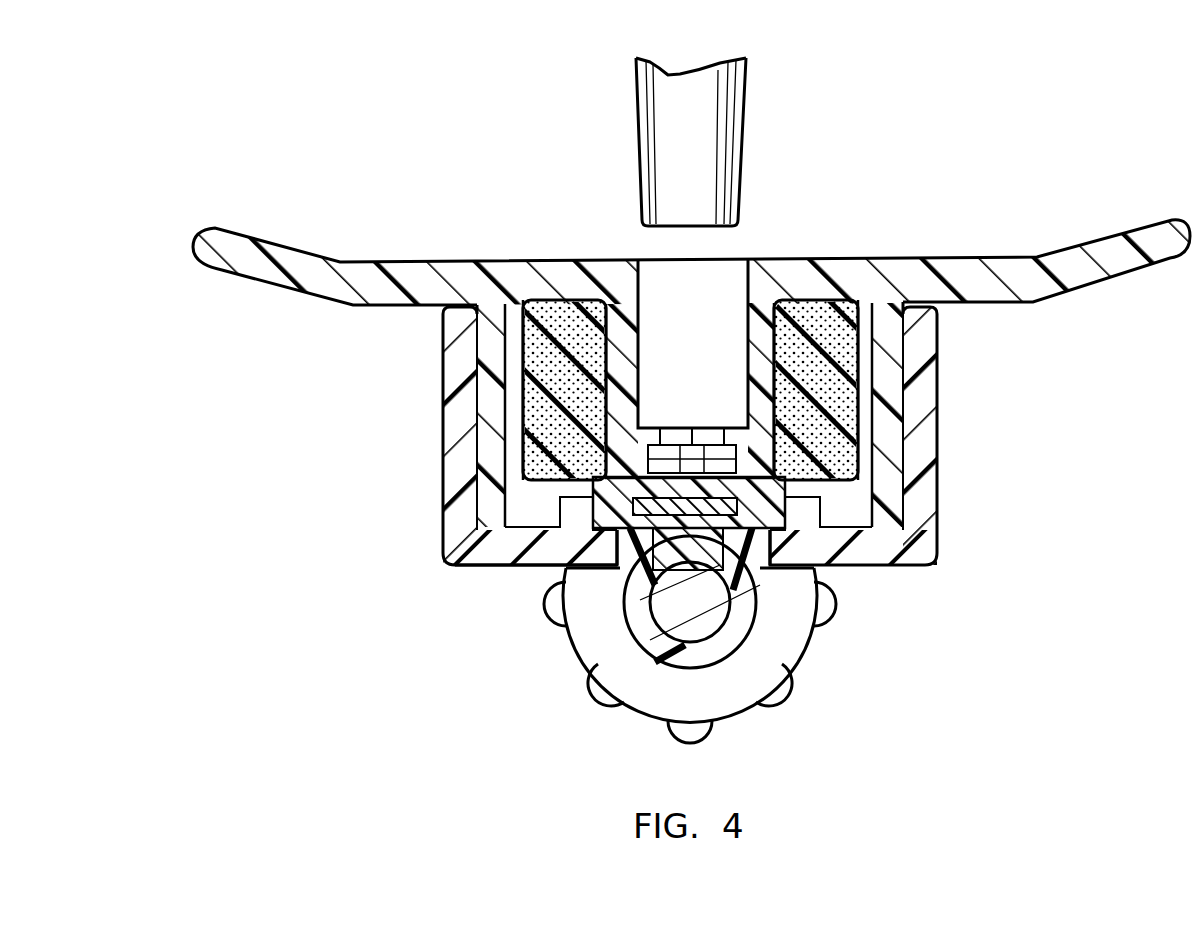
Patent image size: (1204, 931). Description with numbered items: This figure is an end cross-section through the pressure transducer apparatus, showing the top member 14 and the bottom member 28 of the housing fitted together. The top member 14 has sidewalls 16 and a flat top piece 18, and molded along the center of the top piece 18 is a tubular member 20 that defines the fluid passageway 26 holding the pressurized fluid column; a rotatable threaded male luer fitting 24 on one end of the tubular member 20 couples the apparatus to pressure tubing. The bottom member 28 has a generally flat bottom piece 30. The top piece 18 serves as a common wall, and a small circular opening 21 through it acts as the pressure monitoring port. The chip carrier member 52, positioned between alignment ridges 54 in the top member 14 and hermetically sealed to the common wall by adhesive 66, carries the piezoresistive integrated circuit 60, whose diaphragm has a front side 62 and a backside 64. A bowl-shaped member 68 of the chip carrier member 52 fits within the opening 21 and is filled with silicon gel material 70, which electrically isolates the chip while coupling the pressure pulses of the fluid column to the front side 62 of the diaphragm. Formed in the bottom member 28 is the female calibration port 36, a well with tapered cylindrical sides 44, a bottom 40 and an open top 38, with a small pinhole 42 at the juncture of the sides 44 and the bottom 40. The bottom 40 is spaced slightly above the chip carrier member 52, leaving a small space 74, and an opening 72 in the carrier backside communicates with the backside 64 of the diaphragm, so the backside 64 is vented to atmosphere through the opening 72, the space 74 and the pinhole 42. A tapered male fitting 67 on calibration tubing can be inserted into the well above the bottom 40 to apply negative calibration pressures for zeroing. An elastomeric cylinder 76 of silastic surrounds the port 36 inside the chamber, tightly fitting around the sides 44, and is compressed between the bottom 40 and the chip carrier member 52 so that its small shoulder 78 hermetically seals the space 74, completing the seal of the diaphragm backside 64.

The top member 14 is at (443, 565).
The sidewalls 16 is at (443, 410).
The top piece 18 is at (470, 568).
The tubular member 20 is at (745, 628).
The opening 21 is at (705, 565).
The rotatable threaded male luer fitting 24 is at (778, 688).
The fluid passageway 26 is at (700, 612).
The bottom member 28 is at (985, 253).
The bottom piece 30 is at (862, 256).
The female calibration port 36 is at (490, 348).
The open top 38 is at (657, 300).
The bottom 40 is at (693, 440).
The pinhole 42 is at (693, 452).
The tapered cylindrical sides 44 is at (752, 290).
The chip carrier member 52 is at (785, 480).
The alignment ridges 54 is at (580, 495).
The integrated circuit 60 is at (575, 572).
The front side of the transducer diaphragm 62 is at (817, 567).
The backside of the transducer diaphragm 64 is at (698, 440).
The adhesive 66 is at (920, 548).
The tapered male fitting 67 is at (705, 152).
The bowl-shaped member 68 is at (675, 593).
The silicon gel material 70 is at (665, 630).
The opening 72 is at (690, 483).
The space 74 is at (600, 458).
The elastomeric cylinder 76 is at (838, 372).
The shoulder 78 is at (772, 400).